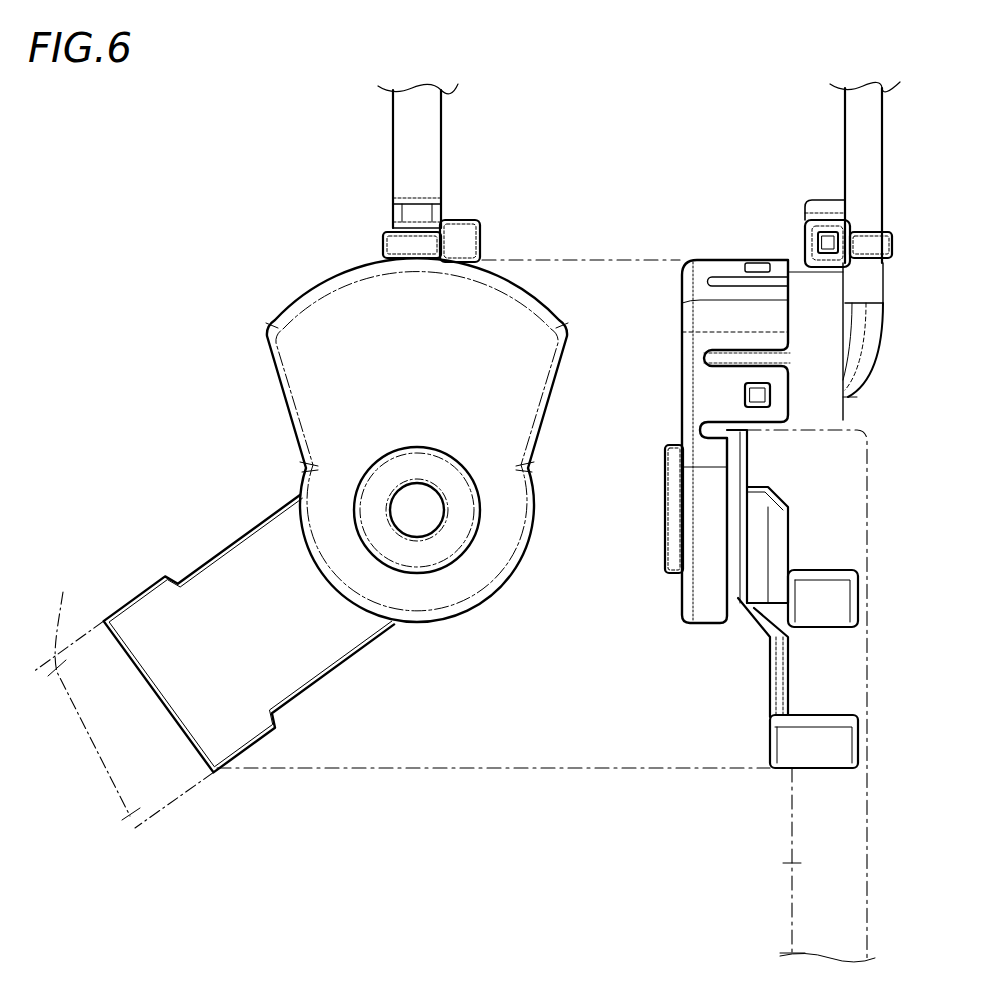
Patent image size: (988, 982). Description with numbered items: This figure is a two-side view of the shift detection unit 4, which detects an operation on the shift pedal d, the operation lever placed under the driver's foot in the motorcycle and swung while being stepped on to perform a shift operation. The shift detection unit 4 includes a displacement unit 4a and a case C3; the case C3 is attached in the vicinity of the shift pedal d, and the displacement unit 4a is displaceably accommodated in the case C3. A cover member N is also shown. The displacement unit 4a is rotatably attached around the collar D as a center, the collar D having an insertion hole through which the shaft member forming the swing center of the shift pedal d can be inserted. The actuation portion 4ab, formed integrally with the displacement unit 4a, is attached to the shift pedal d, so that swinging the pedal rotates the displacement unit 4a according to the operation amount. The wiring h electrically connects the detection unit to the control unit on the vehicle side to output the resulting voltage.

The shift detection unit 4 is at (186, 180).
The displacement unit 4a is at (228, 557).
The actuation portion 4ab is at (770, 678).
The wiring h is at (437, 127).
The cover member N is at (300, 393).
The collar D is at (450, 545).
The case C3 is at (845, 415).
The shift pedal d is at (785, 863).